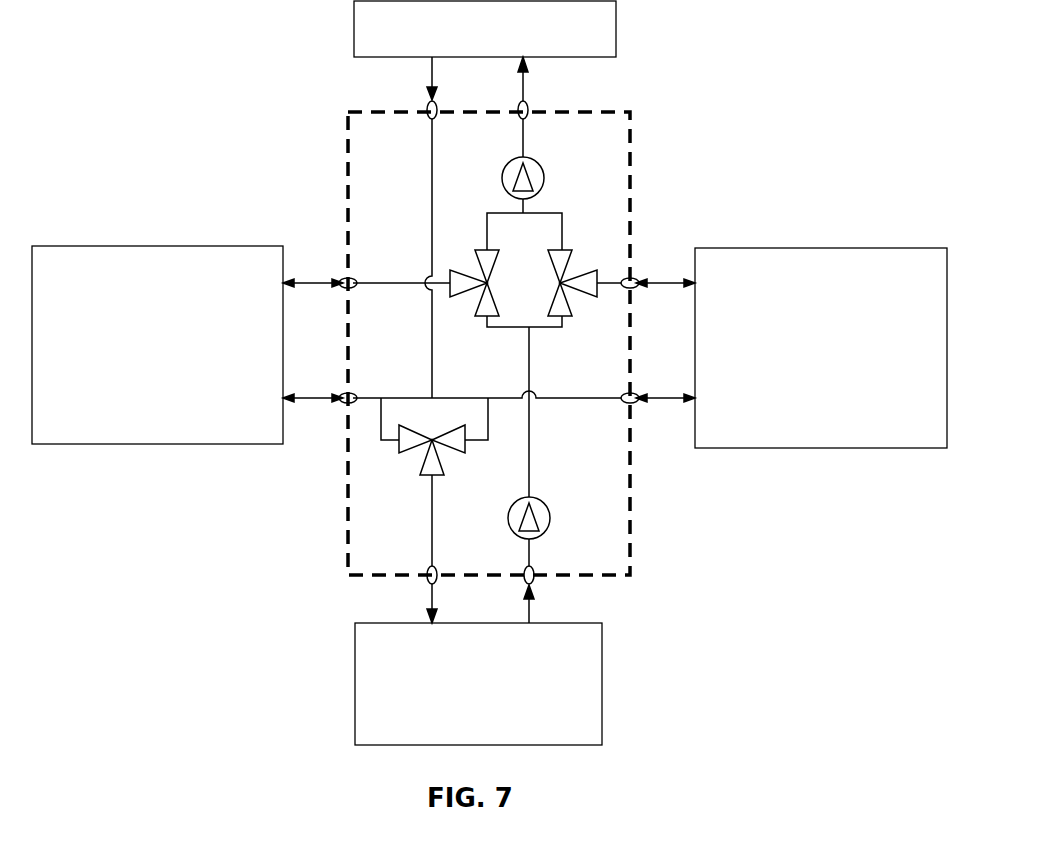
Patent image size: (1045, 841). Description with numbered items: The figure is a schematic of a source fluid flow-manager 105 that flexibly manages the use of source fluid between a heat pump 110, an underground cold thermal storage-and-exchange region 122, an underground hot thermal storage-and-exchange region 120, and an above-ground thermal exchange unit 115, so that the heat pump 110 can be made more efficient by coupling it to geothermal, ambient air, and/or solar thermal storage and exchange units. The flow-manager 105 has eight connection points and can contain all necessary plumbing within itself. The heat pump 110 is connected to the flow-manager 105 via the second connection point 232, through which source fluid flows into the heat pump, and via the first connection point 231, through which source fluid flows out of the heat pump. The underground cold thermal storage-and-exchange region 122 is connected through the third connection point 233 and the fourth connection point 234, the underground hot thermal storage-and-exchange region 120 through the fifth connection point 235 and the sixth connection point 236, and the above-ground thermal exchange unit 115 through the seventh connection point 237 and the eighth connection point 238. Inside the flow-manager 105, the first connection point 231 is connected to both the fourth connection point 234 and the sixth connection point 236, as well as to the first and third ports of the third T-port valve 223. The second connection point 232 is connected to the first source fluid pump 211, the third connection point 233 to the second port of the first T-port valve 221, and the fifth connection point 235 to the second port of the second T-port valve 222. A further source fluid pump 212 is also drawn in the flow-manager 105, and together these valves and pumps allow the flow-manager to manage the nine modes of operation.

The heat pump 110 is at (485, 29).
The source fluid flow-manager 105 is at (489, 343).
The underground cold thermal storage-and-exchange region 122 is at (157, 345).
The underground hot thermal storage-and-exchange region 120 is at (821, 348).
The above-ground thermal exchange unit 115 is at (478, 684).
The first source fluid pump 211 is at (544, 170).
The pump 212 is at (552, 518).
The first T-port valve 221 is at (452, 272).
The second T-port valve 222 is at (574, 263).
The third T-port valve 223 is at (430, 476).
The first connection point 231 is at (426, 109).
The second connection point 232 is at (530, 108).
The third connection point 233 is at (340, 283).
The fourth connection point 234 is at (348, 405).
The fifth connection point 235 is at (638, 284).
The sixth connection point 236 is at (634, 406).
The seventh connection point 237 is at (427, 577).
The eighth connection point 238 is at (537, 576).